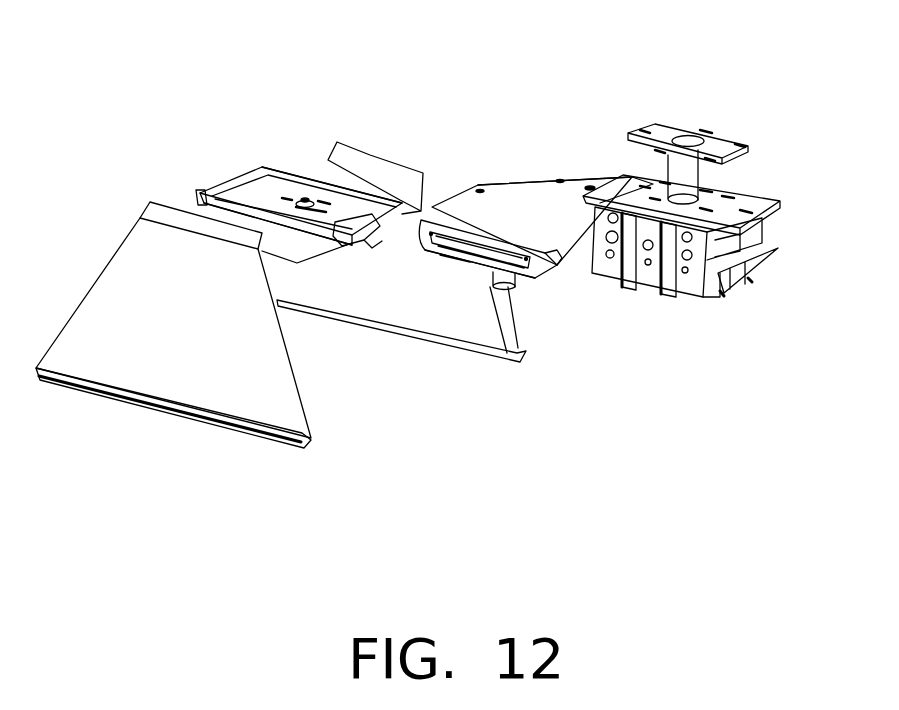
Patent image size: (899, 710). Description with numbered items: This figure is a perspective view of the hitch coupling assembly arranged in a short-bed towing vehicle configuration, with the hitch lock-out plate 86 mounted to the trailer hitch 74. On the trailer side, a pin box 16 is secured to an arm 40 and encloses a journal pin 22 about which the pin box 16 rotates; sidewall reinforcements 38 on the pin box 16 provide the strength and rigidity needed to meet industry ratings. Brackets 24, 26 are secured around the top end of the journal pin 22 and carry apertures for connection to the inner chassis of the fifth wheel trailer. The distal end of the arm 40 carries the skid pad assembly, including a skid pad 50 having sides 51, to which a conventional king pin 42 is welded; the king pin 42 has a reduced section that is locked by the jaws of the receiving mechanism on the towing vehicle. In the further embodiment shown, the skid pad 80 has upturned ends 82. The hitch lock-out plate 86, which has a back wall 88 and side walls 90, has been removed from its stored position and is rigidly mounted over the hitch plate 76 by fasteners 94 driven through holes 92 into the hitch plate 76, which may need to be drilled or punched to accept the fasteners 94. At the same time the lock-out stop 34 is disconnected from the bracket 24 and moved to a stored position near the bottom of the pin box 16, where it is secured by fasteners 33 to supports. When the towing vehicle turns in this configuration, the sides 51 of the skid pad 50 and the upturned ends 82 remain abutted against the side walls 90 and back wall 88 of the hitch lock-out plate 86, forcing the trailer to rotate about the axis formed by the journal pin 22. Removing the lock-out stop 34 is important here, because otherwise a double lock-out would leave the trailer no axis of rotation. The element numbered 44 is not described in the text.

The pin box 16 is at (686, 292).
The journal pin 22 is at (688, 185).
The bracket 24 is at (753, 200).
The bracket 26 is at (703, 132).
The fasteners 33 is at (722, 293).
The lock-out stop 34 is at (765, 268).
The sidewall reinforcements 38 is at (672, 262).
The arm 40 is at (565, 178).
The king pin 42 is at (521, 300).
The plate arm 44 is at (510, 182).
The skid pad 50 is at (402, 220).
The sides 51 is at (443, 252).
The trailer hitch 74 is at (397, 157).
The hitch plate 76 is at (378, 228).
The skid pad 80 is at (517, 283).
The upturned ends 82 is at (560, 262).
The hitch lock-out plate 86 is at (257, 180).
The back wall 88 is at (235, 180).
The side walls 90 is at (197, 197).
The holes 92 is at (302, 195).
The fasteners 94 is at (305, 195).